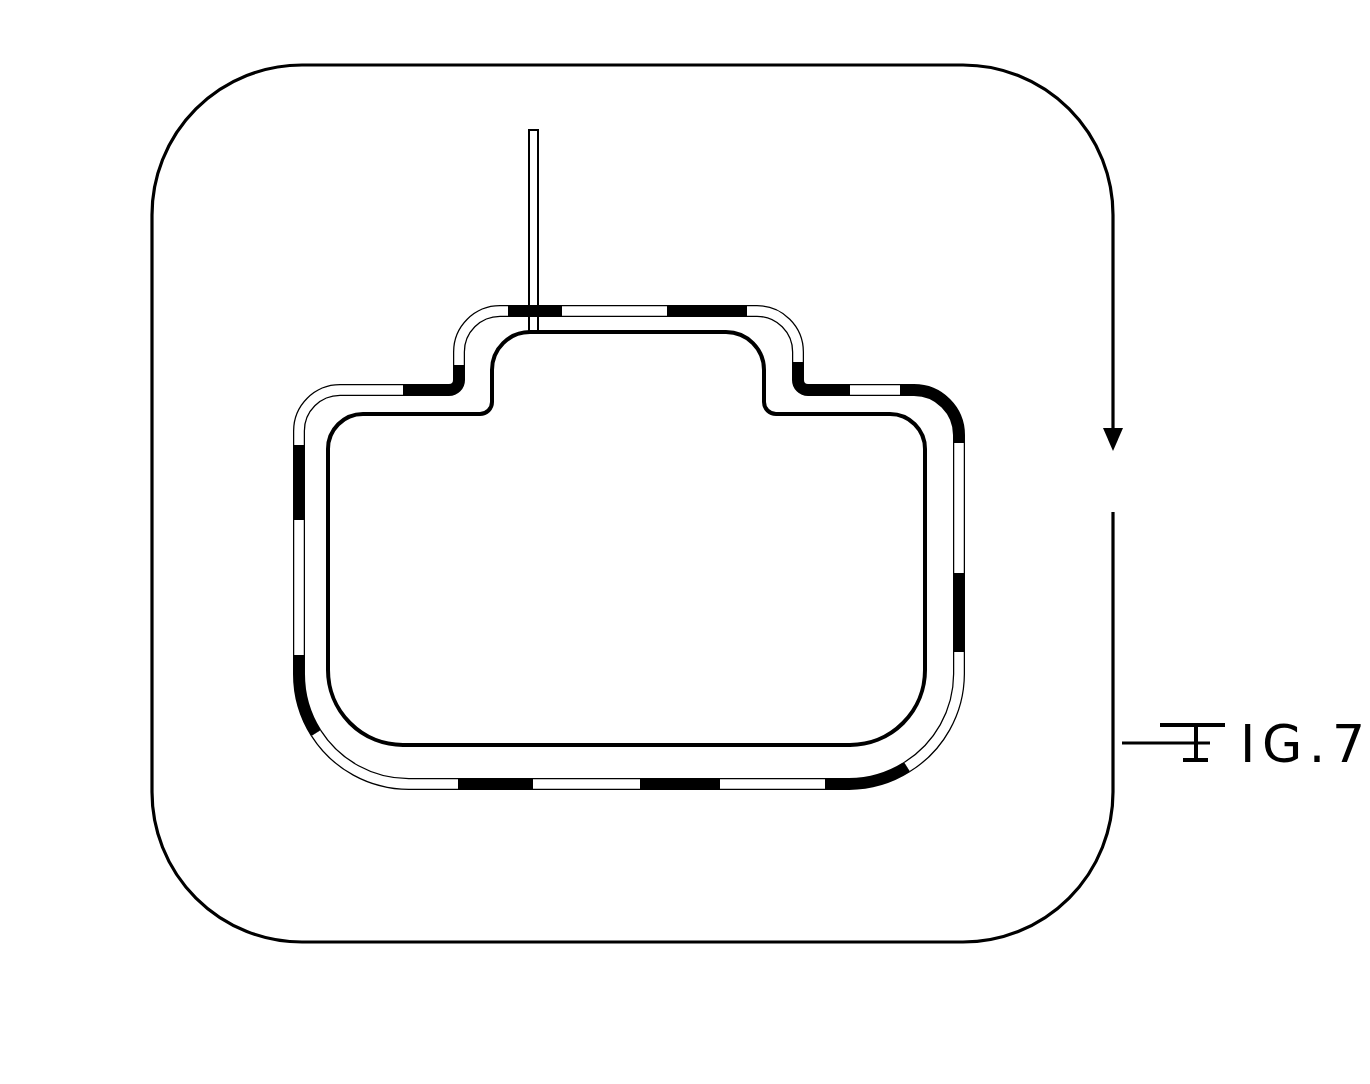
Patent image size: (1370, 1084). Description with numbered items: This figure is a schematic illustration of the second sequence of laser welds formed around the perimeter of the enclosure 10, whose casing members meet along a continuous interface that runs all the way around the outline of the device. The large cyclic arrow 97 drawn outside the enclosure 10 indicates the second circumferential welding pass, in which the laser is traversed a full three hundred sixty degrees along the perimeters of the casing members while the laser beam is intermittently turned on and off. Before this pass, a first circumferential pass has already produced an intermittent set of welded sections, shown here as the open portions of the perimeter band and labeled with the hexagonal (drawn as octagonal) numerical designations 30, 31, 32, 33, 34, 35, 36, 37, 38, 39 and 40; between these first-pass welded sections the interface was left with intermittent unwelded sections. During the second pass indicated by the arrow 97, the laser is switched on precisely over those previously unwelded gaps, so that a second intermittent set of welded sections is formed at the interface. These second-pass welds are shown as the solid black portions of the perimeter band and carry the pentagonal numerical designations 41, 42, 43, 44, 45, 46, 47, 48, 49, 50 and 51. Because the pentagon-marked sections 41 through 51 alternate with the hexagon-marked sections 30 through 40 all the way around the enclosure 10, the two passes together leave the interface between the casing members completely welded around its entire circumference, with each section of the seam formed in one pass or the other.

The device body 10 is at (641, 580).
The cyclic arrow 97 is at (1110, 832).
The welded section 30 is at (1014, 508).
The welded section 31 is at (984, 714).
The welded section 32 is at (772, 830).
The welded section 33 is at (586, 831).
The welded section 34 is at (376, 799).
The welded section 35 is at (239, 587).
The welded section 36 is at (312, 381).
The welded section 37 is at (442, 300).
The welded section 38 is at (614, 254).
The welded section 39 is at (792, 286).
The welded section 40 is at (889, 339).
The welded section 41 is at (1028, 610).
The welded section 42 is at (894, 838).
The welded section 43 is at (679, 853).
The welded section 44 is at (492, 853).
The welded section 45 is at (242, 713).
The welded section 46 is at (231, 479).
The welded section 47 is at (366, 306).
The welded section 48 is at (498, 230).
The welded section 49 is at (708, 233).
The welded section 50 is at (875, 285).
The welded section 51 is at (982, 374).